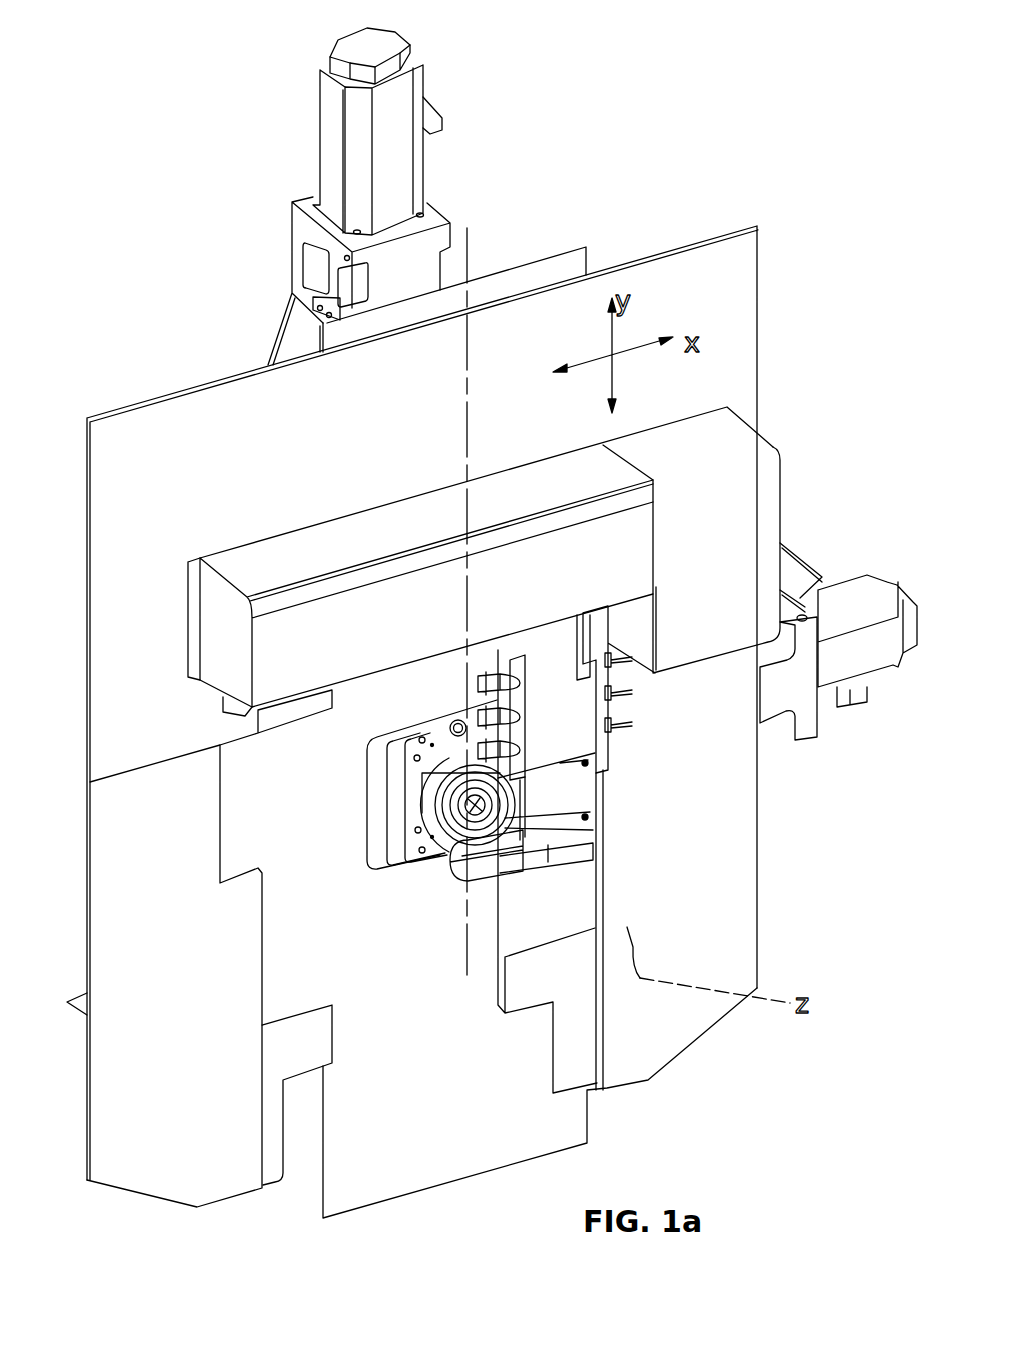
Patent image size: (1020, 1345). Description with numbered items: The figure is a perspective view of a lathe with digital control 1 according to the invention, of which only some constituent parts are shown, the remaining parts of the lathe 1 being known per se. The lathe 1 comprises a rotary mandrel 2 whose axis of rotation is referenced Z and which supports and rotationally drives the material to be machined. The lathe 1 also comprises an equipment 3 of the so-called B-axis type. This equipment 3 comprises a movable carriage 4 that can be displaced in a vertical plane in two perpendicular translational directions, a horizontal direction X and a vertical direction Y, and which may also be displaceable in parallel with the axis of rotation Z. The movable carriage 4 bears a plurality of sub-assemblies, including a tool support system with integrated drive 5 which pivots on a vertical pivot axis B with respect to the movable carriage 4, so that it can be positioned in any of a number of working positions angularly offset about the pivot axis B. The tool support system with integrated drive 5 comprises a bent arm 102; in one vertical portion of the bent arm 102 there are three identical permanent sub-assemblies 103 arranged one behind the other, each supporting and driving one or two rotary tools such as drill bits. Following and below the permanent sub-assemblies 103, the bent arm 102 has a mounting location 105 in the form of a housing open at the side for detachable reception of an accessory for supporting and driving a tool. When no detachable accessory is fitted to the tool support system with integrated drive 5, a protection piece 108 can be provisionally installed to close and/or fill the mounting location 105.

The lathe with digital control 1 is at (687, 170).
The rotary mandrel 2 is at (445, 810).
The equipment 3 is at (608, 878).
The movable carriage 4 is at (540, 863).
The tool support system with integrated drive 5 is at (577, 740).
The bent arm 102 is at (603, 832).
The permanent sub-assemblies for supporting and driving rotary tools 103 is at (577, 695).
The mounting location 105 is at (582, 828).
The protection piece 108 is at (572, 797).
The pivot axis B is at (467, 934).